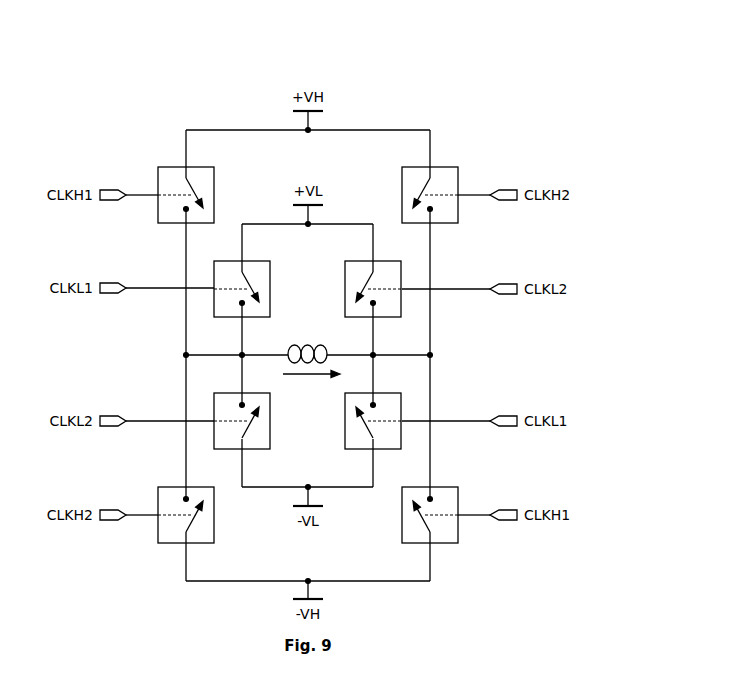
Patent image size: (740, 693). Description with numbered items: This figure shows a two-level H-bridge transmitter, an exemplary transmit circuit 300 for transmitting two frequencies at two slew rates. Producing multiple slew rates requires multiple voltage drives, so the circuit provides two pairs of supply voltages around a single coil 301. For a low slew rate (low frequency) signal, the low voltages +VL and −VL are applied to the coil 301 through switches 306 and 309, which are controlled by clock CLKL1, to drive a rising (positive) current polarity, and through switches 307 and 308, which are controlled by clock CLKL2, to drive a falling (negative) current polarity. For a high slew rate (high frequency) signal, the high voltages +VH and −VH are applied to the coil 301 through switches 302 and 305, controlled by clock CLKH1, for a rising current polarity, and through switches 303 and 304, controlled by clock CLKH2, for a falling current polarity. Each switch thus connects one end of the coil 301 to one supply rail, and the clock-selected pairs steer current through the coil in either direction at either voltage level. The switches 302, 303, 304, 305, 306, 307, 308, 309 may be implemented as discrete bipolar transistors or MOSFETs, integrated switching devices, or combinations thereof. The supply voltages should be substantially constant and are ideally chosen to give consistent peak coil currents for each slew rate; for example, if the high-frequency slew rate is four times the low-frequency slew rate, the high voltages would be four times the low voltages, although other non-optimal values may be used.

The transmit circuit 300 is at (402, 112).
The coil 301 is at (320, 338).
The switch 302 is at (214, 186).
The switch 303 is at (402, 186).
The switch 304 is at (214, 529).
The switch 305 is at (402, 529).
The switch 306 is at (274, 277).
The switch 307 is at (341, 277).
The switch 308 is at (272, 434).
The switch 309 is at (344, 434).